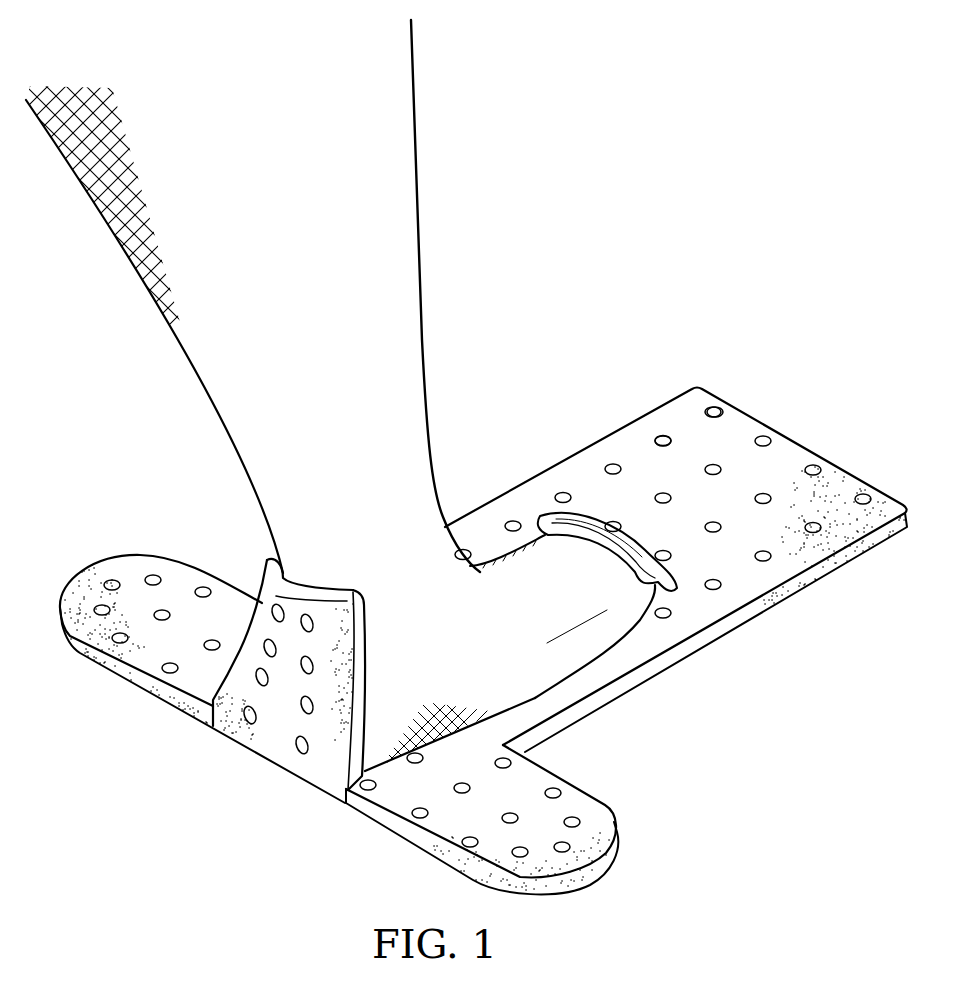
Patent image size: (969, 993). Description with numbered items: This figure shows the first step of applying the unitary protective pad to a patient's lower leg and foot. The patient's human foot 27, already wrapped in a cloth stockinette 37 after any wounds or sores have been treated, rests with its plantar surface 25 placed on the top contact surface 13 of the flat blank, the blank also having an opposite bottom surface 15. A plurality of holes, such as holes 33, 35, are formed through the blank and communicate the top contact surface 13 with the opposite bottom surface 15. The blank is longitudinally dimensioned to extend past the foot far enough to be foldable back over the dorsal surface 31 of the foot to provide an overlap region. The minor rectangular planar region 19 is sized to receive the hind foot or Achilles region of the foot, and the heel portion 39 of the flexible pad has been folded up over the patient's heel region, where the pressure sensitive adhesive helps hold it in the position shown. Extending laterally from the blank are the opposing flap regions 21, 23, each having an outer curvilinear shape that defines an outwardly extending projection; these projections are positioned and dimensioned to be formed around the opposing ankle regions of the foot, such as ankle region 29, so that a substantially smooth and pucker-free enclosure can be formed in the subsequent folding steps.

The top contact surface 13 is at (782, 455).
The opposite bottom surface 15 is at (860, 548).
The minor rectangular planar region 19 is at (368, 647).
The flap region 21 is at (585, 804).
The flap region 23 is at (132, 572).
The plantar surface 25 is at (536, 704).
The human foot 27 is at (614, 625).
The ankle region 29 is at (427, 577).
The dorsal surface 31 is at (520, 575).
The hole 33 is at (716, 411).
The hole 35 is at (663, 440).
The cloth stockinette 37 is at (585, 510).
The heel portion 39 is at (283, 718).